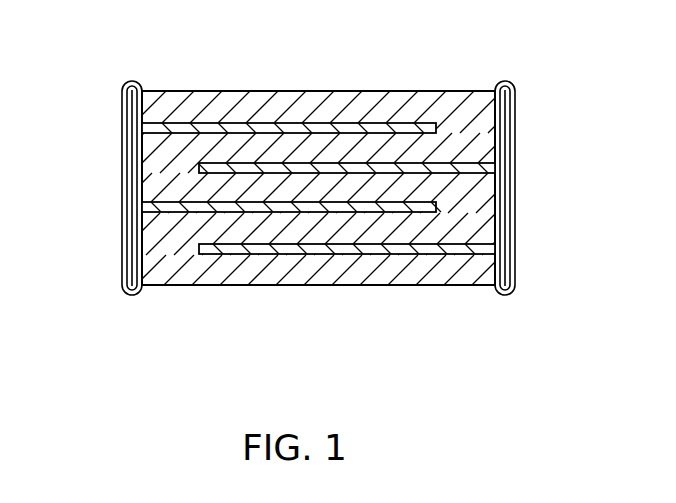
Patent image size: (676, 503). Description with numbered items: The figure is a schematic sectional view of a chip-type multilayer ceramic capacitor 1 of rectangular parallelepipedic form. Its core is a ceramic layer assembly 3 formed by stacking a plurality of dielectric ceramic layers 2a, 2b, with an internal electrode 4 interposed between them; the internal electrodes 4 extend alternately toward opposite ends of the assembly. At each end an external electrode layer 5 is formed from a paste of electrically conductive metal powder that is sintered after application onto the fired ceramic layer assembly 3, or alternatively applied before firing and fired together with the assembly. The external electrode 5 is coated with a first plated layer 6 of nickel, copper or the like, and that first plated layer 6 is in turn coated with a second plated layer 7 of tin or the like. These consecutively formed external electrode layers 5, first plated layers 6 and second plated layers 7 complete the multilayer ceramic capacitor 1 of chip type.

The multilayer ceramic capacitor 1 is at (128, 63).
The dielectric ceramic layer 2a is at (445, 326).
The dielectric ceramic layer 2b is at (272, 316).
The ceramic layer assembly 3 is at (247, 91).
The internal electrode 4 is at (315, 124).
The external electrode layer 5 is at (121, 118).
The first plated layer 6 is at (121, 172).
The second plated layer 7 is at (121, 222).